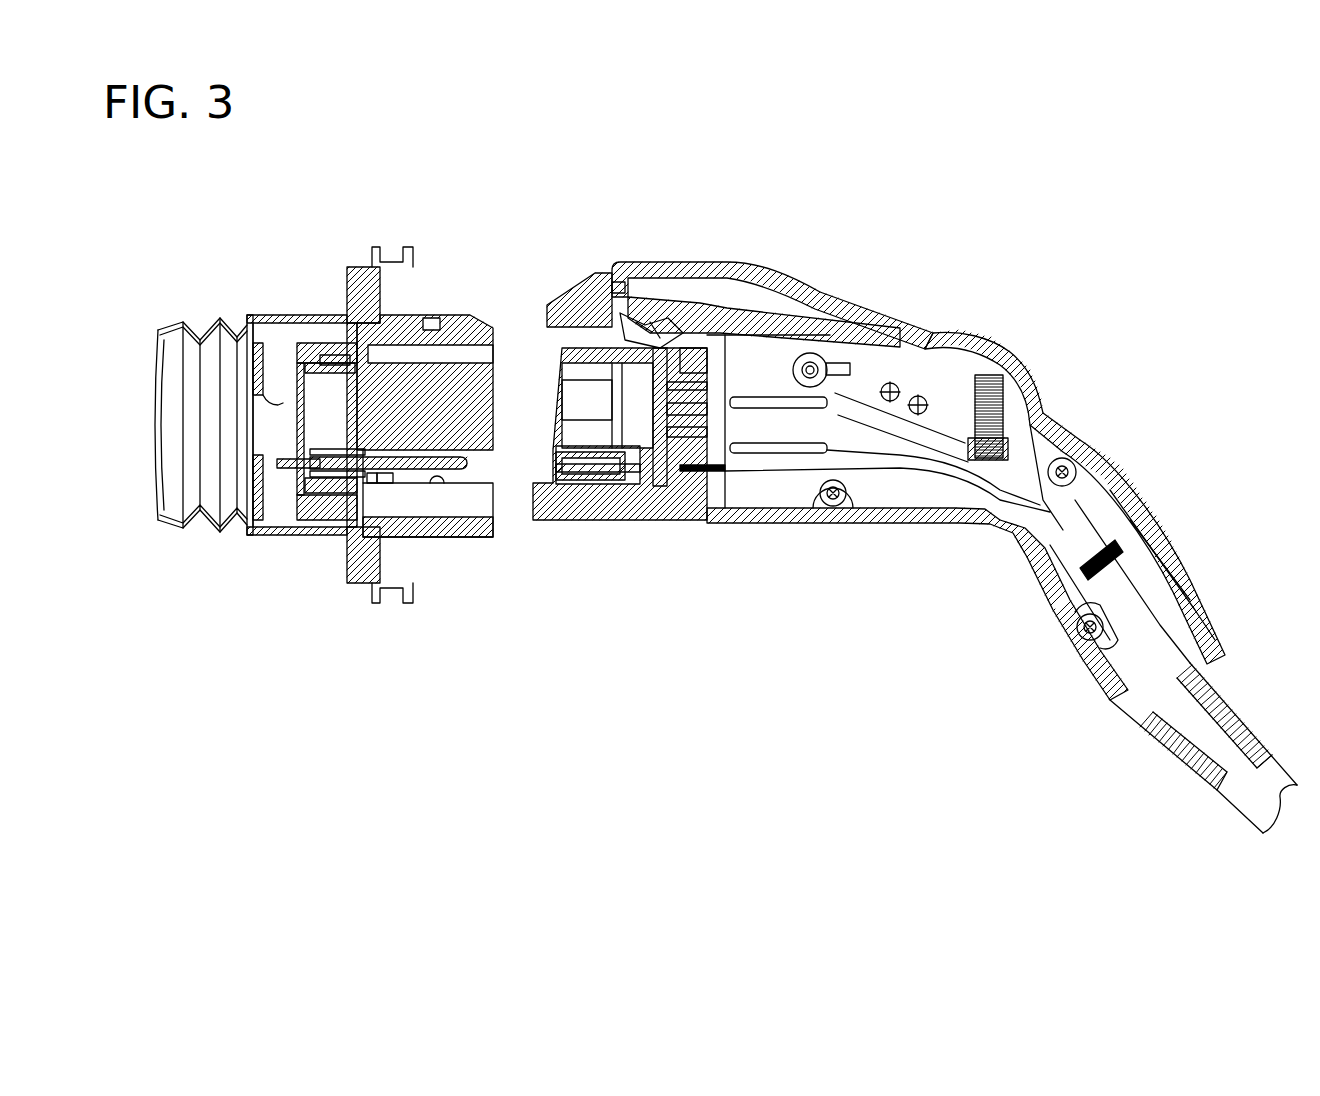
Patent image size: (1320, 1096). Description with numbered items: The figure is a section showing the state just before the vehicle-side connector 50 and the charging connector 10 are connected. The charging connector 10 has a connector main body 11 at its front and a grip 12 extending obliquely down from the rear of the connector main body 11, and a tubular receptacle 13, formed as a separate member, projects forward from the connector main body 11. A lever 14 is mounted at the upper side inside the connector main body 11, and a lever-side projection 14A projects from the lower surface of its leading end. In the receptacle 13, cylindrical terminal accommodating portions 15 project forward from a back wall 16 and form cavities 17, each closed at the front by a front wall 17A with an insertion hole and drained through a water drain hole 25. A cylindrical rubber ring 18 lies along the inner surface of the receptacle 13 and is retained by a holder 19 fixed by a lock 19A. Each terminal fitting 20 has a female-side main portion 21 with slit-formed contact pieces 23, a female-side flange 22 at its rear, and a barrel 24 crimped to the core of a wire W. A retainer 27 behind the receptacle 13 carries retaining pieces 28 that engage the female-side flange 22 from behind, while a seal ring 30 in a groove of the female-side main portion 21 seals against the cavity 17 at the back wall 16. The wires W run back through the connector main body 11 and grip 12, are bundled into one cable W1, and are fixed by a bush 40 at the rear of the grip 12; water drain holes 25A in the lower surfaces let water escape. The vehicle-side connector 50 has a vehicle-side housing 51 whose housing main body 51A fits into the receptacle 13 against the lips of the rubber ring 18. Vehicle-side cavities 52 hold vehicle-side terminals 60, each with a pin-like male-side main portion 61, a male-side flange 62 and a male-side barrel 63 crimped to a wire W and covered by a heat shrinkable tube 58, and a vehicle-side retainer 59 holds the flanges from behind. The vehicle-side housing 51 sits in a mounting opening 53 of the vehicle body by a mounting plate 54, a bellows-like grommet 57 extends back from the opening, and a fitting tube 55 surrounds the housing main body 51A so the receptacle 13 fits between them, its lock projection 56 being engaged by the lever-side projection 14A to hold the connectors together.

The charging connector 10 is at (897, 470).
The connector main body 11 is at (991, 270).
The grip 12 is at (1180, 463).
The receptacle 13 is at (586, 527).
The lever 14 is at (768, 300).
The lever-side projection 14A is at (552, 305).
The terminal accommodating portion 15 is at (580, 495).
The back wall 16 is at (722, 335).
The cavity 17 is at (620, 478).
The front wall 17A is at (553, 463).
The rubber ring 18 is at (640, 338).
The holder 19 is at (600, 350).
The lock 19A is at (617, 312).
The terminal fitting 20 is at (572, 450).
The female-side main portion 21 is at (645, 500).
The female-side flange 22 is at (672, 490).
The contact piece 23 is at (535, 495).
The barrel 24 is at (700, 522).
The water drain hole 25 is at (560, 500).
The water drain hole 25A is at (828, 507).
The retainer 27 is at (812, 352).
The retaining piece 28 is at (835, 378).
The seal ring 30 is at (655, 500).
The bush 40 is at (1240, 693).
The vehicle-side connector 50 is at (527, 385).
The vehicle-side housing 51 is at (464, 298).
The housing main body 51A is at (400, 403).
The vehicle-side cavity 52 is at (443, 480).
The mounting opening 53 is at (330, 513).
The mounting plate 54 is at (362, 290).
The fitting tube 55 is at (477, 537).
The lock projection 56 is at (443, 323).
The grommet 57 is at (222, 530).
The heat shrinkable tube 58 is at (305, 470).
The vehicle-side retainer 59 is at (270, 390).
The vehicle-side terminal 60 is at (407, 485).
The male-side main portion 61 is at (457, 460).
The male-side flange 62 is at (372, 478).
The male-side barrel 63 is at (332, 467).
The wire W is at (280, 463).
The cable W1 is at (1143, 613).